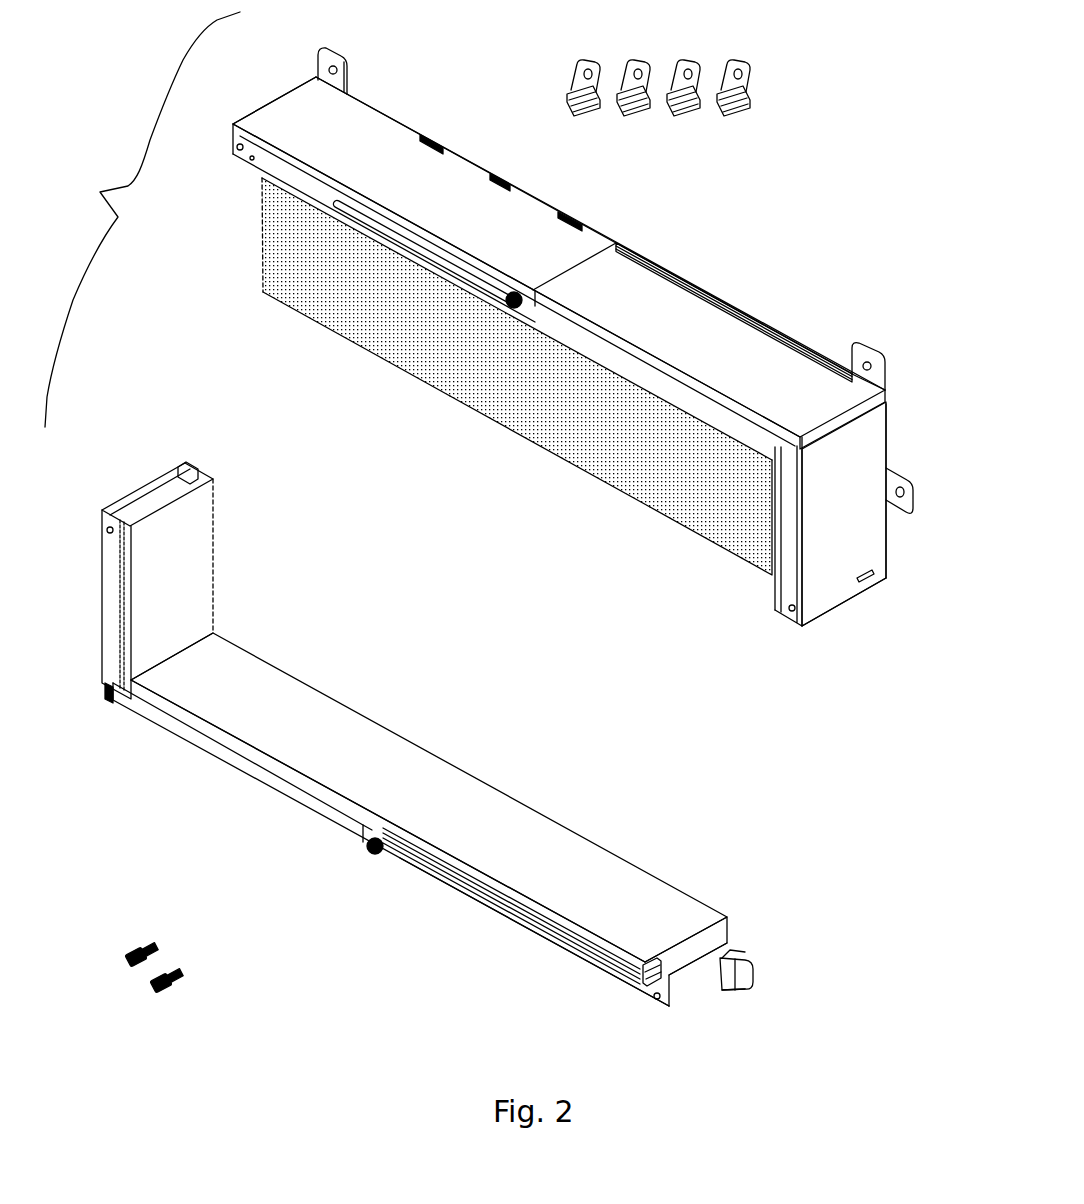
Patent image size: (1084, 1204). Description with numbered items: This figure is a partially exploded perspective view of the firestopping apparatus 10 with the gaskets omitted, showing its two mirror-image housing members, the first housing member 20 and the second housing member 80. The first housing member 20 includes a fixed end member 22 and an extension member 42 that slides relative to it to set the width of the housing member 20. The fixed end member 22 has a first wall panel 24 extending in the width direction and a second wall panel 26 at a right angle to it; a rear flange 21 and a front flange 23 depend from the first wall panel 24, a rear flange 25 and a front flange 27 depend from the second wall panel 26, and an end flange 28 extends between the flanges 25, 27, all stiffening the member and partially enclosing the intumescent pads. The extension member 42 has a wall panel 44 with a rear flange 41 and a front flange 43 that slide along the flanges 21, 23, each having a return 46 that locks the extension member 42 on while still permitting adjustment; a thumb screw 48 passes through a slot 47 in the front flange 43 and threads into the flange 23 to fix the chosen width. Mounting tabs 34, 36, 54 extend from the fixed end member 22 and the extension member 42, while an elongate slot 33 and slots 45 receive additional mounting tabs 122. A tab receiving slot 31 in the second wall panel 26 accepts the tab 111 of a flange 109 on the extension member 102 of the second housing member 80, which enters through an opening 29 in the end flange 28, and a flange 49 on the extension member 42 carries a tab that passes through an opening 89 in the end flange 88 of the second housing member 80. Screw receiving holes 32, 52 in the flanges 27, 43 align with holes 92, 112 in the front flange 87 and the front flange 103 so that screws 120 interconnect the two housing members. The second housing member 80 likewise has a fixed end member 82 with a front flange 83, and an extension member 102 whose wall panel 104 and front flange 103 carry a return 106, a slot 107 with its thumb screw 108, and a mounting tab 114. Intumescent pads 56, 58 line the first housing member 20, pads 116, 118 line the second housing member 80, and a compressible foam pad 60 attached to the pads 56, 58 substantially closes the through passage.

The housing 10 is at (142, 219).
The first housing member 20 is at (735, 213).
The rear flange 21 is at (820, 350).
The fixed end member 22 is at (767, 313).
The front flange 23 is at (607, 342).
The first wall panel 24 is at (697, 308).
The rear flange 25 is at (892, 540).
The second wall panel 26 is at (873, 460).
The front flange 27 is at (773, 573).
The end flange 28 is at (837, 607).
The opening 29 is at (867, 593).
The tab receiving slot 31 is at (878, 578).
The screw receiving hole 32 is at (792, 612).
The elongate slot 33 is at (657, 257).
The fixed mounting tab 34 is at (884, 352).
The fixed mounting tab 36 is at (915, 492).
The rear flange 41 is at (548, 205).
The extension member 42 is at (390, 98).
The front flange 43 is at (263, 172).
The wall panel 44 is at (462, 158).
The slots 45 is at (430, 140).
The return 46 is at (535, 300).
The slot 47 is at (337, 200).
The thumb screw 48 is at (510, 310).
The flange 49 is at (288, 92).
The screw receiving hole 52 is at (237, 147).
The fixed mounting tab 54 is at (343, 57).
The intumescent firestopping material pad 56 is at (768, 547).
The intumescent firestopping material pad 58 is at (643, 377).
The compressible foam pad 60 is at (400, 352).
The second housing member 80 is at (167, 795).
The fixed end member 82 is at (247, 778).
The front flange 83 is at (282, 790).
The front flange 87 is at (110, 642).
The end flange 88 is at (132, 493).
The opening 89 is at (168, 480).
The screw receiving hole 92 is at (106, 530).
The extension member 102 is at (572, 978).
The front flange 103 is at (603, 980).
The wall panel 104 is at (695, 992).
The return 106 is at (647, 985).
The slot 107 is at (480, 897).
The thumb screw 108 is at (375, 858).
The flange 109 is at (730, 990).
The tab 111 is at (737, 953).
The screw receiving hole 112 is at (658, 1000).
The fixed mounting tab 114 is at (755, 978).
The intumescent firestopping material pad 116 is at (200, 582).
The intumescent firestopping material pad 118 is at (300, 693).
The screws 120 is at (128, 948).
The additional mounting tabs 122 is at (593, 53).